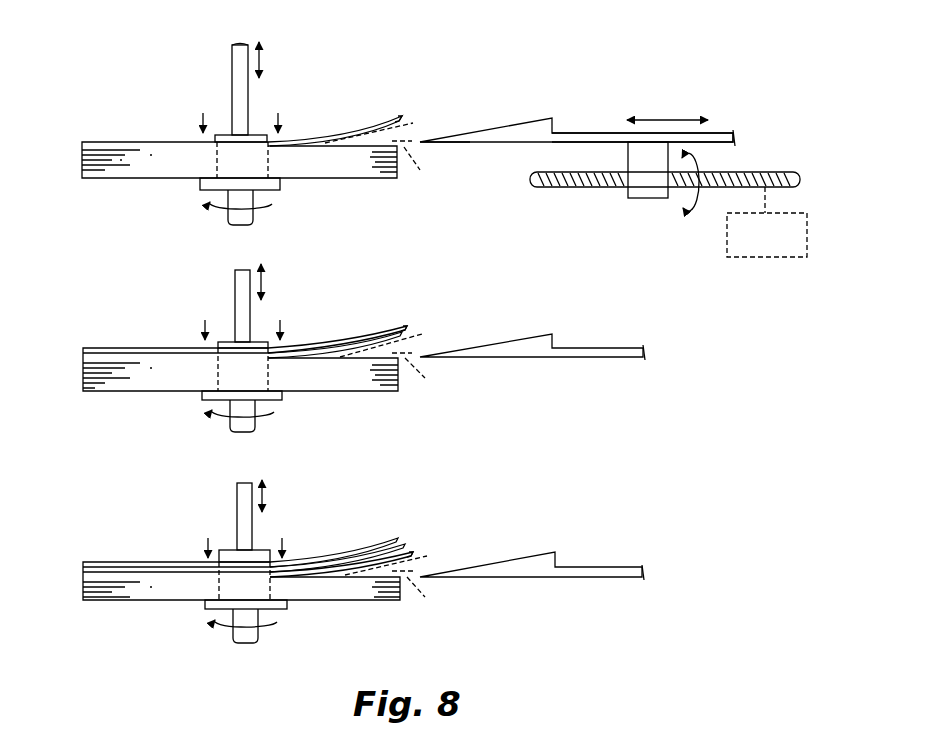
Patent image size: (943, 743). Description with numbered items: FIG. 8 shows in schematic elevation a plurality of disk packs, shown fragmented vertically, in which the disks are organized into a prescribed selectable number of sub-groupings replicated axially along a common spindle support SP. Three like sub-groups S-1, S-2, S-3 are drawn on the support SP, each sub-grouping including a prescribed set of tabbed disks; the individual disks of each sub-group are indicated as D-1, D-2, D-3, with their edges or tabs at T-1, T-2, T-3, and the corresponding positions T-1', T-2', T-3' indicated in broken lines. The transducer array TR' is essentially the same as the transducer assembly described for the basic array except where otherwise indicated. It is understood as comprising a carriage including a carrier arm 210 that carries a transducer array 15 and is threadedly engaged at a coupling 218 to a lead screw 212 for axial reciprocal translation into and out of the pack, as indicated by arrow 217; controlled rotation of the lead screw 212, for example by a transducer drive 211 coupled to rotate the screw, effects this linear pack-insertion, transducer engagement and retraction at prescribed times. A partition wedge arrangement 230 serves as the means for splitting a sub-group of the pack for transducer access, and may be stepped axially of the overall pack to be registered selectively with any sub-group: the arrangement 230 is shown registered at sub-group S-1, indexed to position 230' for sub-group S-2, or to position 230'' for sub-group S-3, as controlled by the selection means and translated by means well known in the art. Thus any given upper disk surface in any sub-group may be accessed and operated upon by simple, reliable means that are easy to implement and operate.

The first sub-group S-1 is at (138, 138).
The second sub-group S-2 is at (148, 343).
The third sub-group S-3 is at (152, 560).
The spindle support SP is at (230, 222).
The first document sheet D-1 is at (362, 125).
The second document sheet D-2 is at (370, 338).
The third document sheet D-3 is at (378, 551).
The trailing edge of first sheet T-1 is at (384, 90).
The trailing edge of second sheet T-2 is at (407, 306).
The trailing edge of third sheet T-3 is at (411, 522).
The original position of first sheet edge T-1' is at (424, 167).
The original position of second sheet edge T-2' is at (429, 378).
The original position of third sheet edge T-3' is at (427, 600).
The partition wedge arrangement 230 is at (530, 108).
The partition wedge arrangement, indexed position 230' is at (492, 327).
The partition wedge arrangement, indexed position 230'' is at (494, 543).
The transducer array 15 is at (436, 144).
The transducer array TR' is at (668, 169).
The direction of blade travel 217 is at (665, 106).
The blade carrier rod 210 is at (573, 133).
The lead screw 212 is at (596, 190).
The traveling nut 218 is at (663, 198).
The motor 211 is at (760, 257).